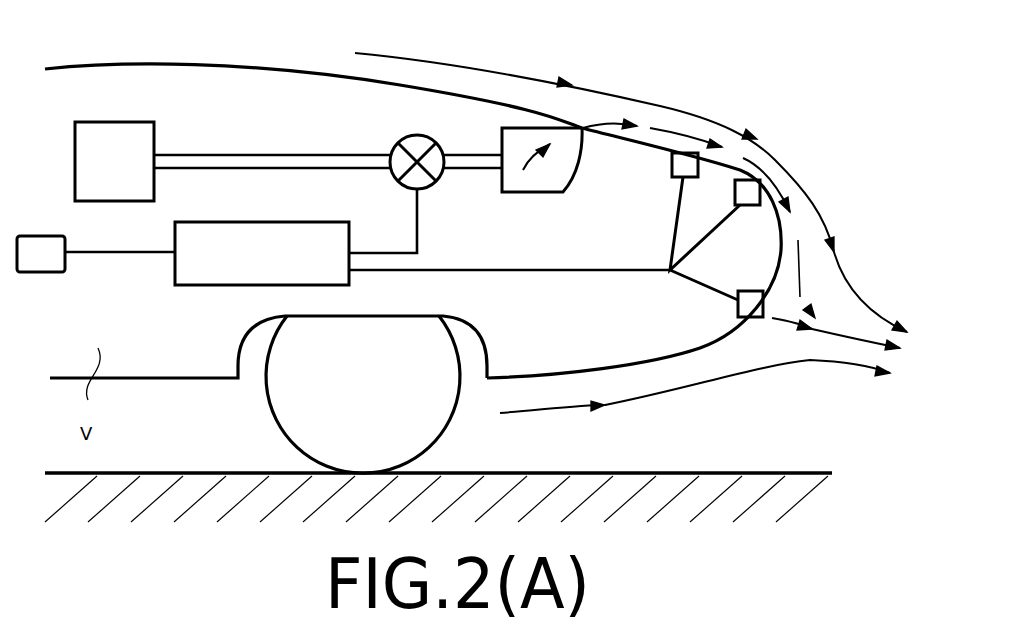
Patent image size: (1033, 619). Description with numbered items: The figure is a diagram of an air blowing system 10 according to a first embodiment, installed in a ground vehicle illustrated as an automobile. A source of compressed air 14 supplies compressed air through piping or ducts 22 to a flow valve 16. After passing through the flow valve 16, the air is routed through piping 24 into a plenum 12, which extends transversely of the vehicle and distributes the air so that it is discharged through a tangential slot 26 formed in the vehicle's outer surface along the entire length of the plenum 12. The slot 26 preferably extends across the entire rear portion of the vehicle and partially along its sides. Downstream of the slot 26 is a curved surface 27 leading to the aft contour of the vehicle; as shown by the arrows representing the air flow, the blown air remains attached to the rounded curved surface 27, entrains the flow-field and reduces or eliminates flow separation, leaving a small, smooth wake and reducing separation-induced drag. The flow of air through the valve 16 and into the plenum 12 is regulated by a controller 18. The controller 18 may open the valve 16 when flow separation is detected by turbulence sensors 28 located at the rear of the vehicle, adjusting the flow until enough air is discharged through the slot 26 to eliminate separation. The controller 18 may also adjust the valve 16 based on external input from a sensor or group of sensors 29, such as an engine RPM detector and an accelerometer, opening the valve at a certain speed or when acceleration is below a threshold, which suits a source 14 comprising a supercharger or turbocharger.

The air blowing system 10 is at (610, 293).
The plenum 12 is at (573, 165).
The source of compressed air 14 is at (115, 122).
The flow valve 16 is at (417, 135).
The controller 18 is at (205, 285).
The piping or ducts 22 is at (248, 152).
The piping 24 is at (462, 173).
The tangential slot 26 is at (588, 120).
The curved surface 27 is at (790, 233).
The turbulence sensors 28 is at (683, 165).
The sensors 29 is at (40, 275).